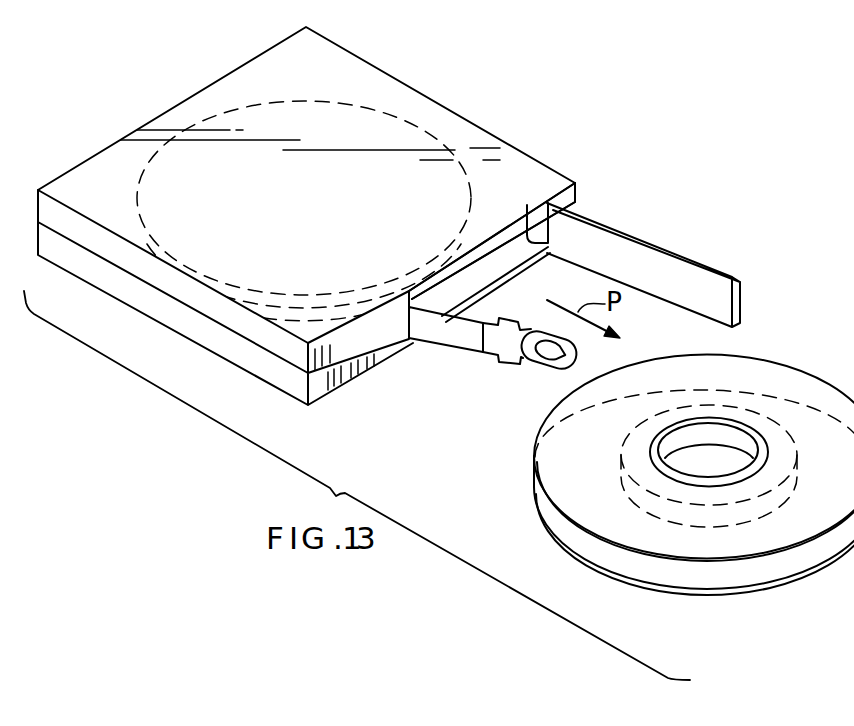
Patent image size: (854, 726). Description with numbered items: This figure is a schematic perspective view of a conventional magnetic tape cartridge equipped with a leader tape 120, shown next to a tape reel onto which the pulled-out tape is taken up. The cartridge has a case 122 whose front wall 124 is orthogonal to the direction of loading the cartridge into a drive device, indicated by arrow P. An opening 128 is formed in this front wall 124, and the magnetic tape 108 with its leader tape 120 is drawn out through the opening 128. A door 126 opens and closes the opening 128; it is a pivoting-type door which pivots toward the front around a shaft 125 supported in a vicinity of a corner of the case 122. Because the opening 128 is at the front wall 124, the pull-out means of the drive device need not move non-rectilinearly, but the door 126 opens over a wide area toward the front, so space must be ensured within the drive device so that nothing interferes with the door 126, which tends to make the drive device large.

The case 122 is at (438, 105).
The front wall 124 is at (338, 392).
The opening 128 is at (512, 243).
The shaft 125 is at (553, 232).
The door 126 is at (703, 262).
The magnetic tape 108 is at (463, 337).
The leader tape 120 is at (512, 352).